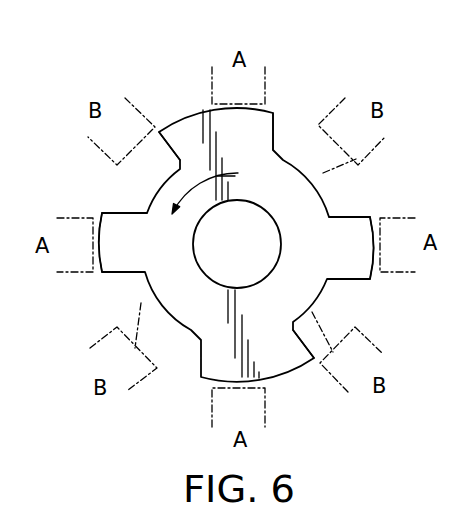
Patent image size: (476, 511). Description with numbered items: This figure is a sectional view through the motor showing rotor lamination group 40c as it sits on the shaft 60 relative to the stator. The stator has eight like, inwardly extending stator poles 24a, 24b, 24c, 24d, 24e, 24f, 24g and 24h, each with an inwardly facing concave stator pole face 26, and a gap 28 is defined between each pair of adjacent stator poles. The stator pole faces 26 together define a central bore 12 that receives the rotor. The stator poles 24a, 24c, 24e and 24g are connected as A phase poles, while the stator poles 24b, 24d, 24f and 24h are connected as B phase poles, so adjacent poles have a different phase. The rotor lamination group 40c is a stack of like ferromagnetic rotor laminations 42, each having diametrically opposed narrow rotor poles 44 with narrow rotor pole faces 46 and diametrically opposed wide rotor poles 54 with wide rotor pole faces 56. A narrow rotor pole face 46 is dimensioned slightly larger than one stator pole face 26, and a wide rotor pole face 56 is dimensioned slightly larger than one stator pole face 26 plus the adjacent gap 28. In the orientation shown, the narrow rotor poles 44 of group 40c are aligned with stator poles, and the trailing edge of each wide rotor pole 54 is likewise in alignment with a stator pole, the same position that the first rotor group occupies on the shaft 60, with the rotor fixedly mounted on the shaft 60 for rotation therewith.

The central bore 12 is at (135, 186).
The stator pole 24a is at (247, 92).
The stator pole 24b is at (355, 140).
The stator pole 24c is at (393, 257).
The stator pole 24d is at (358, 353).
The stator pole 24e is at (233, 410).
The stator pole 24f is at (114, 360).
The stator pole 24g is at (75, 258).
The stator pole 24h is at (127, 125).
The stator pole face 26 is at (323, 173).
The gap 28 is at (365, 188).
The rotor lamination group 40c is at (257, 137).
The rotor lamination 42 is at (275, 133).
The narrow rotor pole 44 is at (353, 225).
The narrow rotor pole face 46 is at (378, 232).
The wide rotor pole 54 is at (203, 113).
The wide rotor pole face 56 is at (177, 120).
The shaft 60 is at (268, 239).